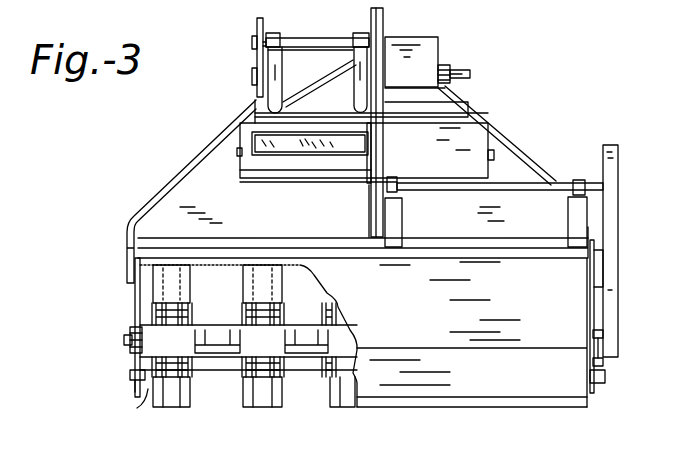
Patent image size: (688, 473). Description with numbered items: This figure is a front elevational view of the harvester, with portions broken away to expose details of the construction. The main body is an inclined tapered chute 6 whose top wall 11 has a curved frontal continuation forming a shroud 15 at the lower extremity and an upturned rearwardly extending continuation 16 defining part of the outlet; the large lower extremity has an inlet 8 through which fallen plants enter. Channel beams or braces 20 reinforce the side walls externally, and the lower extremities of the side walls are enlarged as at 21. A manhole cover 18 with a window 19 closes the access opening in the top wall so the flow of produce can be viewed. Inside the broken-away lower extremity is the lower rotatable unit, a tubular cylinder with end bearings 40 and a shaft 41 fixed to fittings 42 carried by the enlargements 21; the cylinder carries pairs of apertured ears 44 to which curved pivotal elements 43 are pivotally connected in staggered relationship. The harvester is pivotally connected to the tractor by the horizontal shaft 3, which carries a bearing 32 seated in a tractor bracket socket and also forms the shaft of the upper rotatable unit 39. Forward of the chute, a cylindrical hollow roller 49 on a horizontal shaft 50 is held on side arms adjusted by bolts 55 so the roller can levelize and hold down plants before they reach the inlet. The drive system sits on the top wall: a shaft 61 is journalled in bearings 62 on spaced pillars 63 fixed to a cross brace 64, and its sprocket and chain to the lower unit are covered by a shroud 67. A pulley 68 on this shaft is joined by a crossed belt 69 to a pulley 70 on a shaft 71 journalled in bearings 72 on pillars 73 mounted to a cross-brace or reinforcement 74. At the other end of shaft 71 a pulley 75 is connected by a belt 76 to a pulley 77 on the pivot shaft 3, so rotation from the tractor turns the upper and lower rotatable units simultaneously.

The horizontal shaft 3 is at (470, 73).
The inclined tapered chute 6 is at (203, 168).
The inlet 8 is at (140, 409).
The top wall 11 is at (395, 176).
The shroud 15 is at (363, 317).
The upturned rearwardly extending continuation 16 is at (430, 46).
The manhole cover 18 is at (285, 170).
The window 19 is at (257, 142).
The channel beams or braces 20 is at (168, 191).
The enlargements 21 is at (135, 296).
The bearing 32 is at (449, 63).
The upper rotatable unit 39 is at (343, 336).
The bearings 40 is at (130, 371).
The shaft 41 is at (124, 341).
The fittings 42 is at (129, 327).
The pivotal elements 43 is at (260, 283).
The apertured ears 44 is at (325, 309).
The cylindrical hollow roller 49 is at (521, 385).
The horizontal shaft 50 is at (605, 377).
The bolts 55 is at (603, 359).
The shaft 61 is at (550, 183).
The bearings 62 is at (392, 177).
The pillars 63 is at (402, 212).
The cross brace 64 is at (472, 243).
The shroud 67 is at (612, 170).
The pulley 68 is at (372, 211).
The crossed belt 69 is at (384, 134).
The pulley 70 is at (383, 19).
The shaft 71 is at (322, 38).
The bearings 72 is at (273, 33).
The pillars 73 is at (282, 77).
The cross-brace or reinforcement 74 is at (456, 103).
The pulley 75 is at (257, 30).
The belt 76 is at (257, 60).
The pulley 77 is at (257, 86).